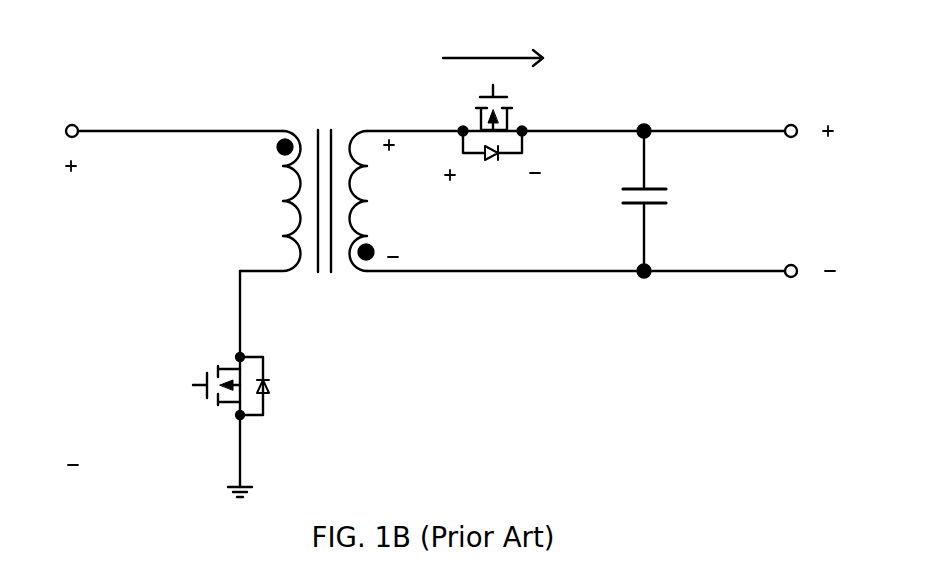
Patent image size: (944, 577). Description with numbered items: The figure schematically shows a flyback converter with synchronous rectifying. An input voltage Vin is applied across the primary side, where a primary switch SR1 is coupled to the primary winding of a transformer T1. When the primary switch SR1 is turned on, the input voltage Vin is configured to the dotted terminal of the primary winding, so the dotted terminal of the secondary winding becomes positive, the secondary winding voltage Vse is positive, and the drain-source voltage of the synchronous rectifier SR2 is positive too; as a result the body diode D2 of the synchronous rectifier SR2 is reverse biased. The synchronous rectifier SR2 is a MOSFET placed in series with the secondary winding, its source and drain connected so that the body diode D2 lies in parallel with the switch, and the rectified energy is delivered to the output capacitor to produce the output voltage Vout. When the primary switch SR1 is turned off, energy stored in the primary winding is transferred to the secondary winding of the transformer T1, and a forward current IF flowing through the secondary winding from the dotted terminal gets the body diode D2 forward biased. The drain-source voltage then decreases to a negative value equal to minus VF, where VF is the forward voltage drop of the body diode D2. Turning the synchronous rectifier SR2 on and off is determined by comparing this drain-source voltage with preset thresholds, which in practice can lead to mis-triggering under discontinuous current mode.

The transformer T1 is at (307, 180).
The primary switch SR1 is at (230, 384).
The synchronous rectifier SR2 is at (490, 105).
The body diode D2 is at (502, 157).
The input voltage Vin is at (164, 295).
The output voltage Vout is at (734, 201).
The secondary winding voltage Vse is at (393, 198).
The forward voltage drop VF is at (492, 182).
The forward current IF is at (493, 43).